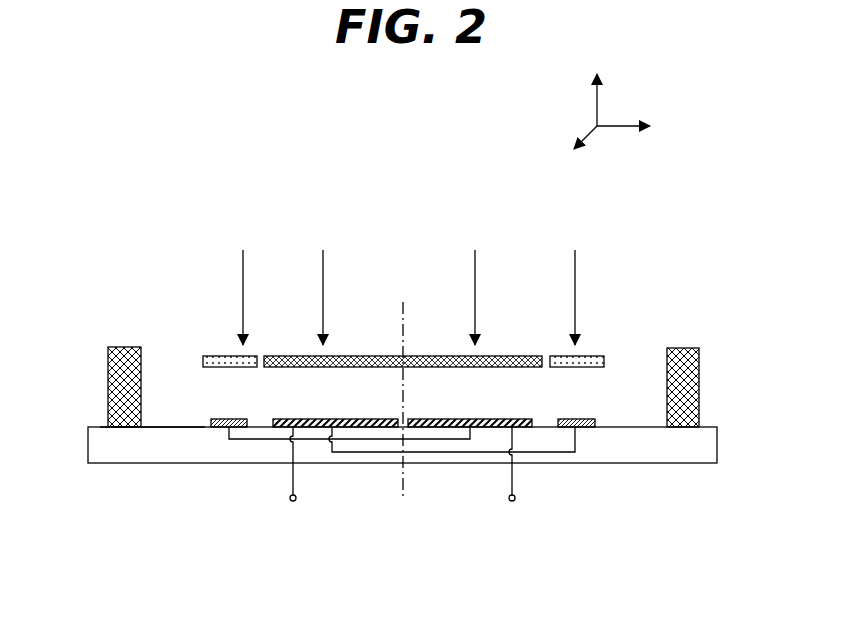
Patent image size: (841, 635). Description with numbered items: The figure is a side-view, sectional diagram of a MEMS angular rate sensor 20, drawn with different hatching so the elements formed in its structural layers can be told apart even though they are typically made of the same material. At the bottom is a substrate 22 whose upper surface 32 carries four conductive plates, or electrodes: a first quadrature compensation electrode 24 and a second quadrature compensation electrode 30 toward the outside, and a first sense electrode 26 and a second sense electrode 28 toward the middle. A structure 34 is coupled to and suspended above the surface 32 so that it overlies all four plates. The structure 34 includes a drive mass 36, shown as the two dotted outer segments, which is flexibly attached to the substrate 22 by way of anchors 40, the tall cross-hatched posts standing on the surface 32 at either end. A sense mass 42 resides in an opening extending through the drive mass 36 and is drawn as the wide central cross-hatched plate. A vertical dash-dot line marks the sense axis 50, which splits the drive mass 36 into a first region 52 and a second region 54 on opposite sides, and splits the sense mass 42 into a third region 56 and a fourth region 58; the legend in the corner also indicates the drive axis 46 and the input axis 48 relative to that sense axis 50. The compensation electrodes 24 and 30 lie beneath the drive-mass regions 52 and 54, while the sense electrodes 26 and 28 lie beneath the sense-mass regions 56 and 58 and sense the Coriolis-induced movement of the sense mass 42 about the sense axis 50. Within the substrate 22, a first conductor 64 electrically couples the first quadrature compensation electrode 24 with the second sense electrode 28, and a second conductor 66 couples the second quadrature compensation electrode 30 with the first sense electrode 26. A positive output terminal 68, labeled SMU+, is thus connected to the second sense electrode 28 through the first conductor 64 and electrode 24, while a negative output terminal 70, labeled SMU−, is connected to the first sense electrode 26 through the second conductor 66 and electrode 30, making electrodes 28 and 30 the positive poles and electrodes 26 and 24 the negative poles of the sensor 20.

The angular rate sensor 20 is at (641, 566).
The substrate 22 is at (93, 447).
The first quadrature compensation electrode 24 is at (588, 419).
The first sense electrode 26 is at (457, 419).
The second sense electrode 28 is at (343, 419).
The second quadrature compensation electrode 30 is at (222, 419).
The surface of substrate 32 is at (172, 427).
The structure 34 is at (205, 272).
The drive mass 36 is at (218, 356).
The anchors 40 is at (118, 347).
The sense mass 42 is at (395, 356).
The drive axis 46 is at (404, 308).
The input axis 48 is at (620, 127).
The sense axis 50 is at (590, 130).
The first region 52 is at (575, 284).
The second region 54 is at (242, 284).
The third region 56 is at (474, 284).
The fourth region 58 is at (323, 284).
The first conductor 64 is at (465, 453).
The second conductor 66 is at (247, 441).
The positive output terminal 68 is at (297, 497).
The negative output terminal 70 is at (516, 497).